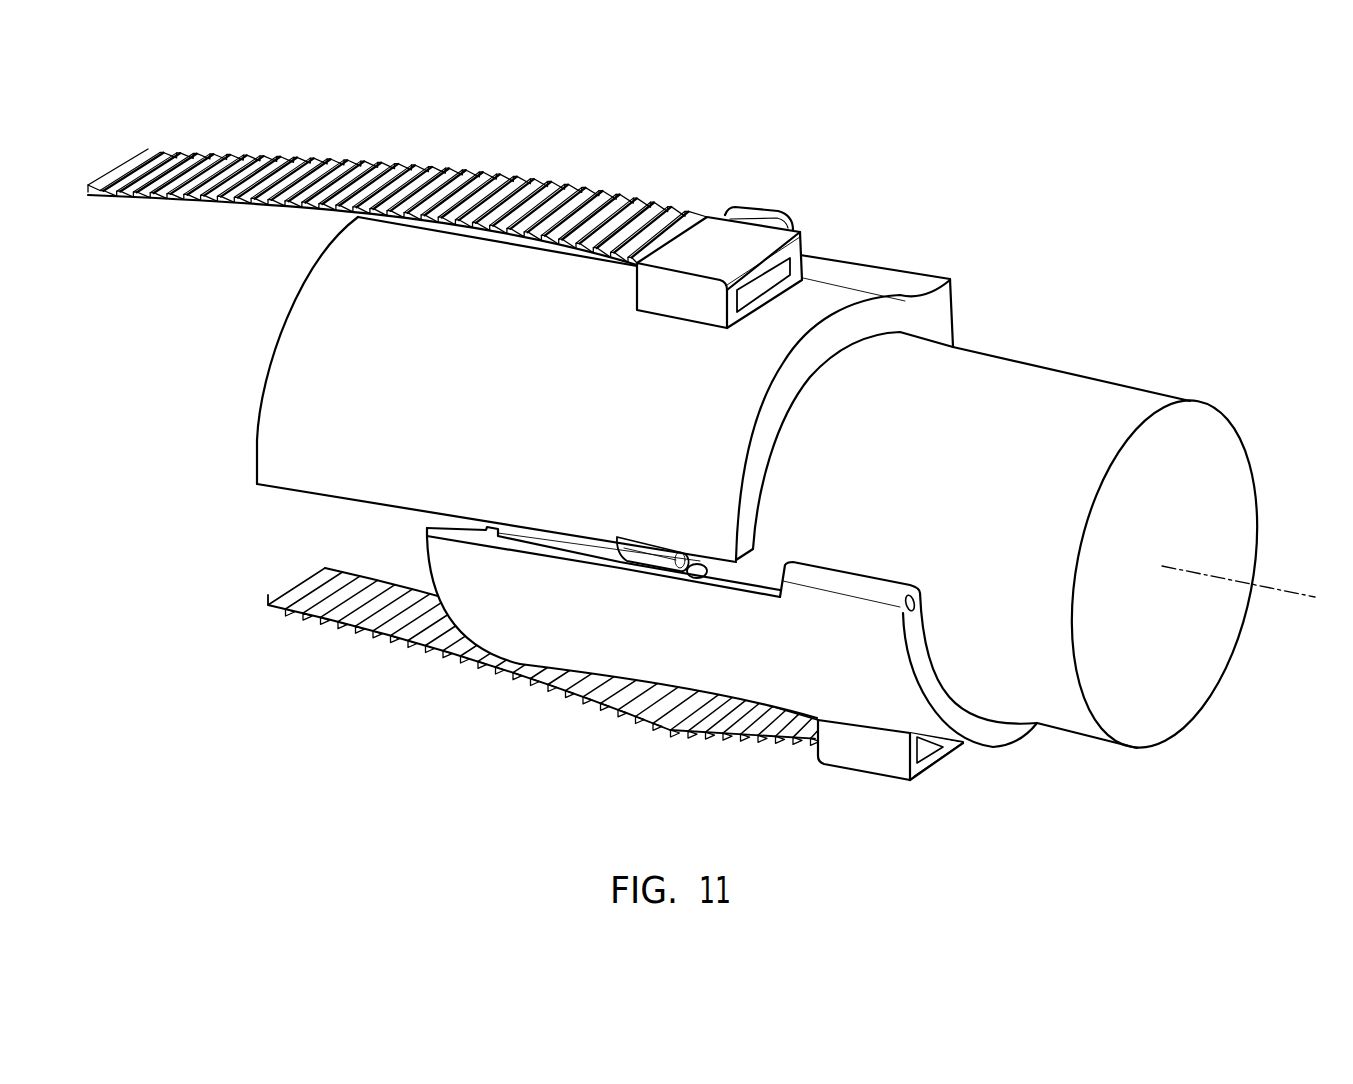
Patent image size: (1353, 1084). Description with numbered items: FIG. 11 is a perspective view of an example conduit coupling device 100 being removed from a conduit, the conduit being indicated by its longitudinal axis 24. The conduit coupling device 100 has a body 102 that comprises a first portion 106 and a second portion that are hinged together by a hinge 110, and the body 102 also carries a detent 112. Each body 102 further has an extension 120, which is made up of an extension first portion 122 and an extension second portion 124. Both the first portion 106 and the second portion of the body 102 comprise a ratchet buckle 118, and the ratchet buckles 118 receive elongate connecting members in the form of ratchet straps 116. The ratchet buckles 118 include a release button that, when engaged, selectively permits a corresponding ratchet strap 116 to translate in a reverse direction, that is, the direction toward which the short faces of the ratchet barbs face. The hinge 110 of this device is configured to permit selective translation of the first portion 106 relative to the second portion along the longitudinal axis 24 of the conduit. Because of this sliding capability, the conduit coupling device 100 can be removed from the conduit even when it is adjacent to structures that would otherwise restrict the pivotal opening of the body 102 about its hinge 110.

The longitudinal axis 24 is at (1275, 590).
The conduit coupling device 100 is at (1129, 181).
The body 102 is at (881, 194).
The first portion 106 is at (897, 266).
The hinge 110 is at (750, 567).
The detent 112 is at (700, 570).
The ratchet strap 116 is at (567, 183).
The ratchet buckle 118 is at (757, 216).
The extension 120 is at (467, 240).
The extension first portion 122 is at (389, 217).
The extension second portion 124 is at (427, 550).